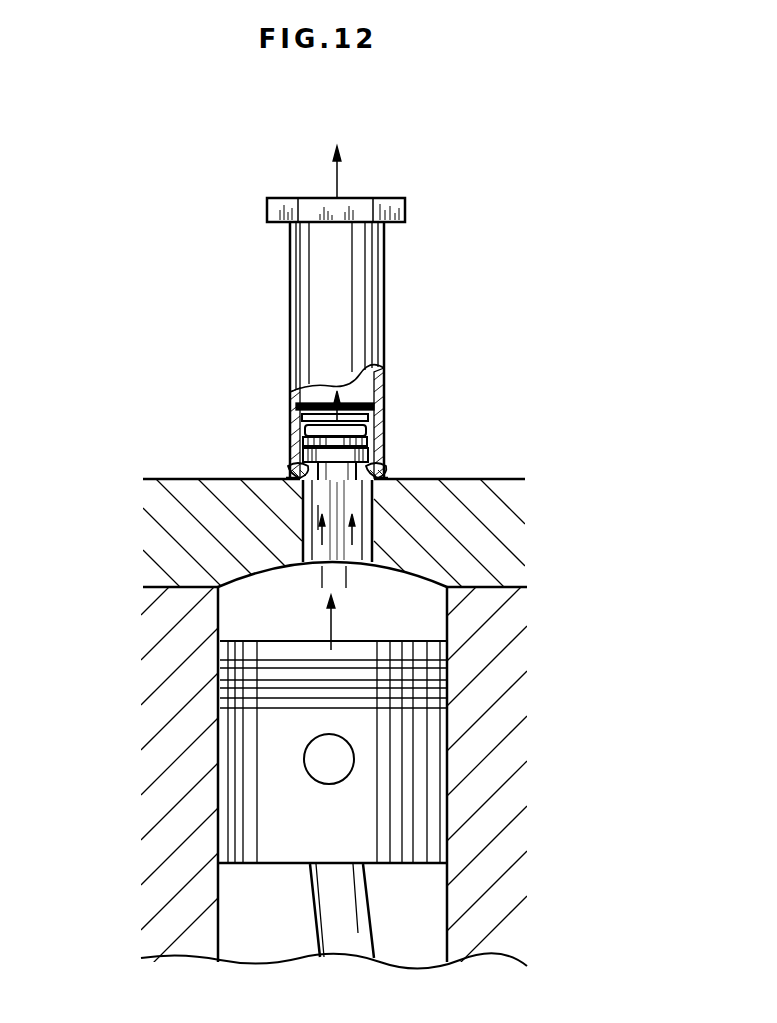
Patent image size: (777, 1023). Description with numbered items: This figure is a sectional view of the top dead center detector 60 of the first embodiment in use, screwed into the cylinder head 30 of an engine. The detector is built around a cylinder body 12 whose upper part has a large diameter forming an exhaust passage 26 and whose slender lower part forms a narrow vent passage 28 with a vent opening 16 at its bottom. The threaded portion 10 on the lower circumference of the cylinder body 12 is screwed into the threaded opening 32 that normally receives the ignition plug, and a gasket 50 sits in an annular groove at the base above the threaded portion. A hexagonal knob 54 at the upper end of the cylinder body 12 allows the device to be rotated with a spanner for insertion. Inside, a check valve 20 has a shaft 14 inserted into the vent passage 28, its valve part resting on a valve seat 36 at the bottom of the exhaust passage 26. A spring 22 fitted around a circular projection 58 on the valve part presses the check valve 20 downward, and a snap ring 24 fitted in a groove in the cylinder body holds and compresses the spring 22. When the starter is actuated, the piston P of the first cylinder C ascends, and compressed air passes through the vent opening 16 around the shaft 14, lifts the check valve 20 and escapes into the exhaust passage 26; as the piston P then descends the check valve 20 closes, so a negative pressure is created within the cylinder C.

The threaded portion 10 is at (372, 520).
The cylinder body 12 is at (384, 275).
The shaft 14 is at (307, 510).
The vent opening 16 is at (292, 477).
The check valve 20 is at (383, 420).
The spring 22 is at (290, 390).
The snap ring 24 is at (383, 385).
The exhaust passage 26 is at (383, 362).
The vent passage 28 is at (307, 522).
The cylinder head 30 is at (218, 556).
The threaded opening 32 is at (375, 498).
The valve seat 36 is at (293, 463).
The gasket 50 is at (386, 478).
The knob 54 is at (267, 205).
The circular projection 58 is at (386, 440).
The detector 60 is at (388, 190).
The first cylinder C is at (410, 612).
The piston P is at (410, 830).